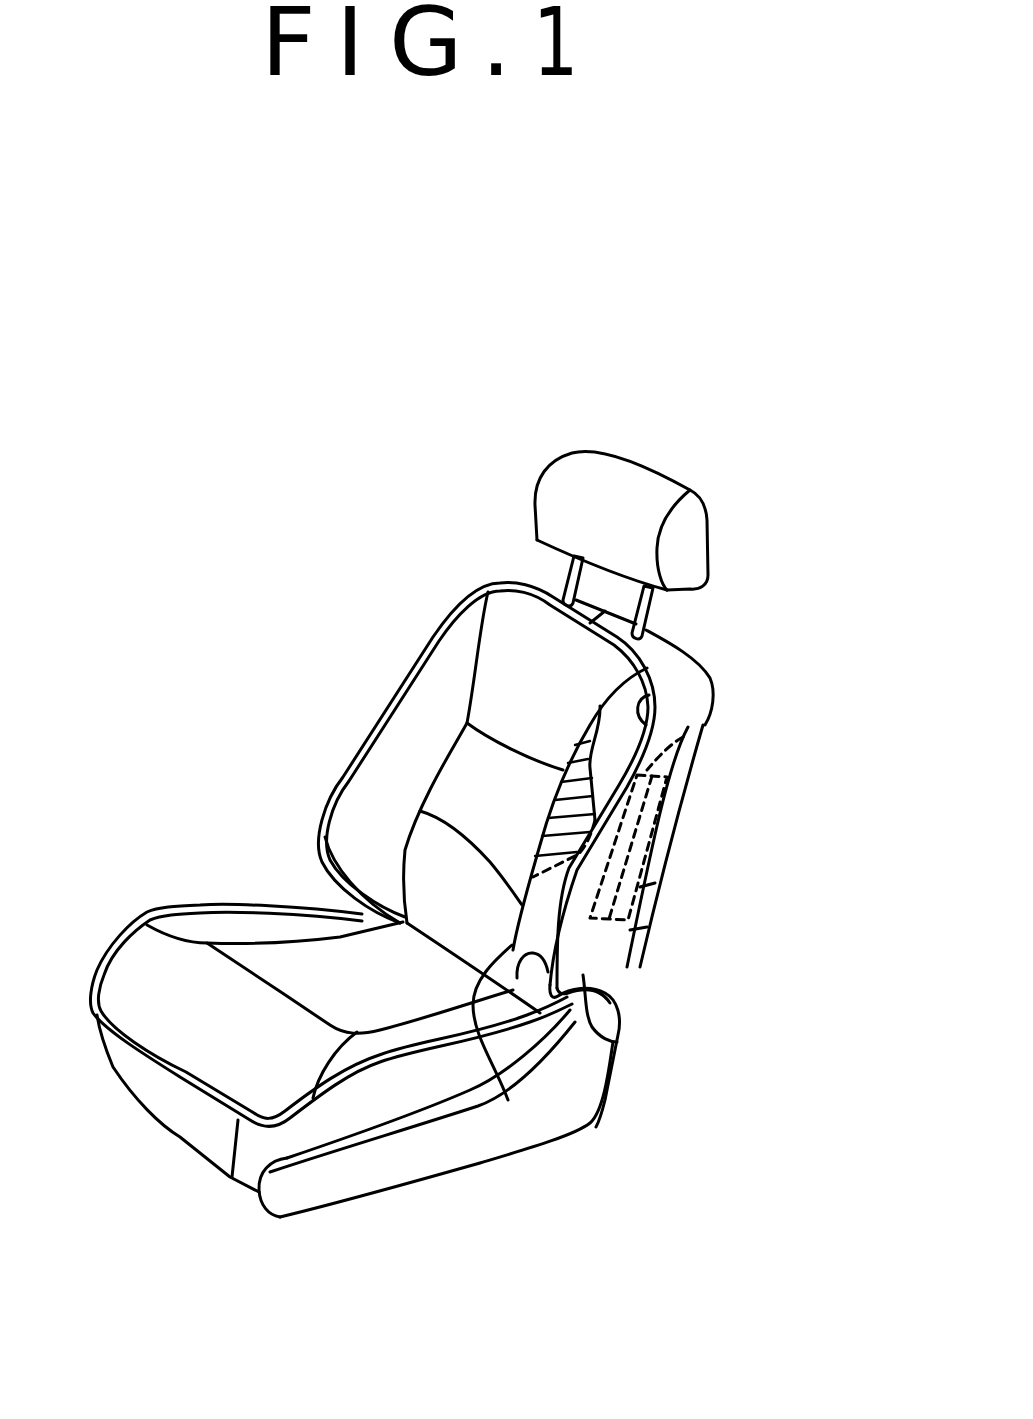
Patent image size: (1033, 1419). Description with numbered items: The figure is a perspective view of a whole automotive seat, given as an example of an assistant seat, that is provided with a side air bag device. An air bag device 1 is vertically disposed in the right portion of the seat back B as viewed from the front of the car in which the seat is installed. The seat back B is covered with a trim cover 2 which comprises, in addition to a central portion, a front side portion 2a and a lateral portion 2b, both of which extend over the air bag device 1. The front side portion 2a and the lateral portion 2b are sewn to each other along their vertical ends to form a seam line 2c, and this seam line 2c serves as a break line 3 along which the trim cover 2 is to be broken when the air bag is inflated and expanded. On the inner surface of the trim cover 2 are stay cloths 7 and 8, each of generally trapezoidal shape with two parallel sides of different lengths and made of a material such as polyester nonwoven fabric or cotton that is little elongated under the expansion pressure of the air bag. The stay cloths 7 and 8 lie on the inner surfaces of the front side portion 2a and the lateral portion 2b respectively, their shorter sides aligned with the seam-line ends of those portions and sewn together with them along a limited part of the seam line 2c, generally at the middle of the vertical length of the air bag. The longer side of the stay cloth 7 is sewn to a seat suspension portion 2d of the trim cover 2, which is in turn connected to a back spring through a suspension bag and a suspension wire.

The seat back B is at (439, 607).
The air bag device 1 is at (637, 967).
The trim cover 2 is at (414, 736).
The front side portion 2a is at (508, 1100).
The lateral portion 2b is at (618, 1043).
The seam line 2c is at (653, 687).
The seat suspension portion 2d is at (420, 811).
The break line 3 is at (760, 778).
The stay cloth 7 is at (599, 709).
The stay cloth 8 is at (687, 735).